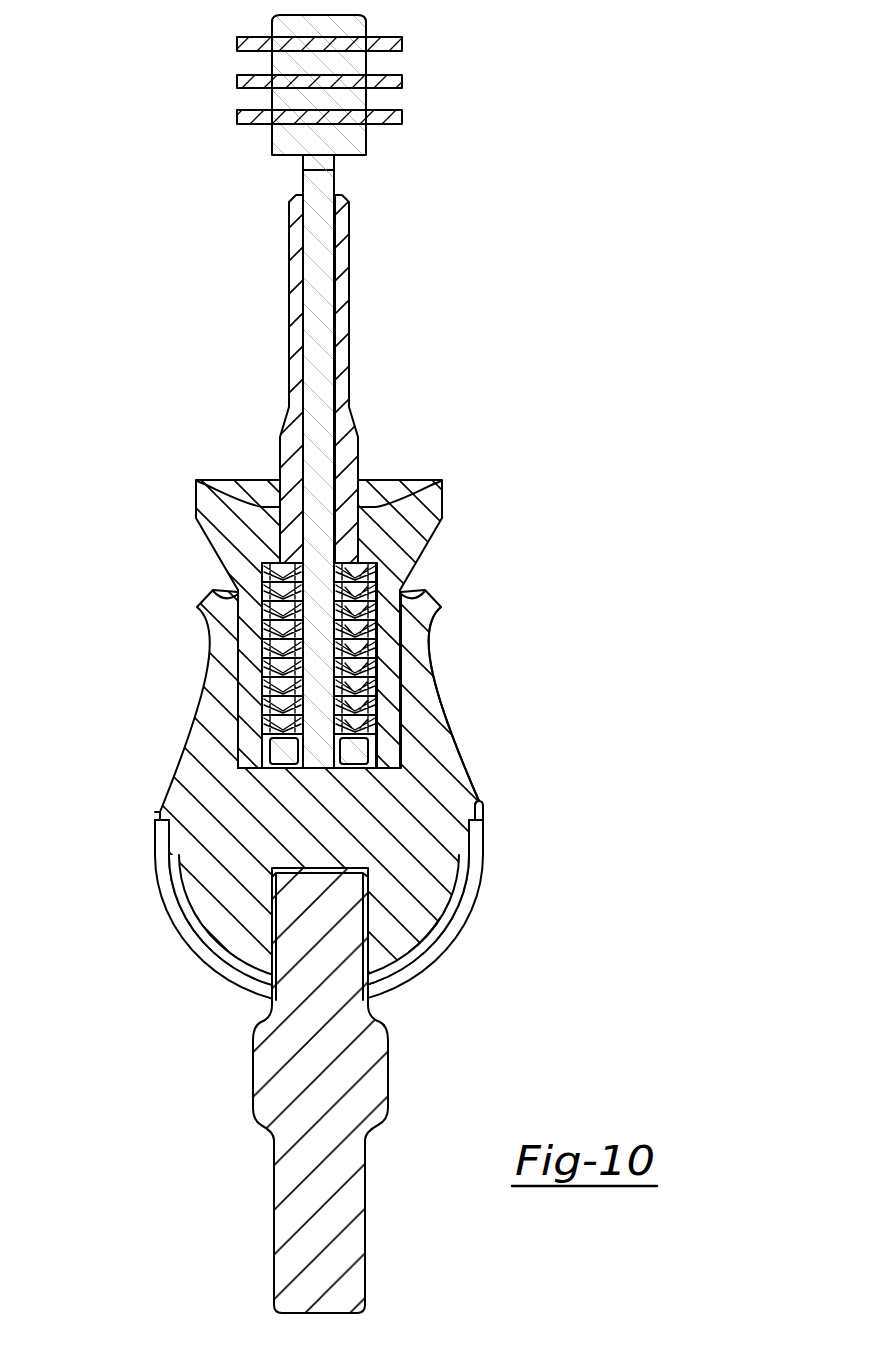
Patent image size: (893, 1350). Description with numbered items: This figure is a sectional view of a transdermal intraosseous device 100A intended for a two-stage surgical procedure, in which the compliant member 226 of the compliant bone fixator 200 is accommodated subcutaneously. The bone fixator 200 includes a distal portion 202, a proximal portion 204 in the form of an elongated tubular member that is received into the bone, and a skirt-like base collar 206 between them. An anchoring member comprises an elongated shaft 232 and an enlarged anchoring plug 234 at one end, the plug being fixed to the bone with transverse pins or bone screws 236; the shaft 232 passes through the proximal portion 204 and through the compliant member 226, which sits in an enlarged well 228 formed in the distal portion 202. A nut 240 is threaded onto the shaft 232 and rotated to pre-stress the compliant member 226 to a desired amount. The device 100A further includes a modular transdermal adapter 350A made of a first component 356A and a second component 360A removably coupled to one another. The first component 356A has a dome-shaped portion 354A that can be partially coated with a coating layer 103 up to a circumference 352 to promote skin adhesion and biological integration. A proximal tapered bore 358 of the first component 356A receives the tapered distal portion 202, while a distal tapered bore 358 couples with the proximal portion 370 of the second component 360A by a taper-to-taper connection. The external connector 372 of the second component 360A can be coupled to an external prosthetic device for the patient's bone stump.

The transdermal intraosseous device 100A is at (124, 898).
The coating layer 103 is at (166, 848).
The compliant bone fixator 200 is at (400, 318).
The distal portion 202 is at (392, 715).
The proximal portion 204 is at (297, 278).
The base collar 206 is at (210, 508).
The compliant member 226 is at (342, 648).
The well 228 is at (354, 625).
The elongated shaft 232 is at (325, 247).
The anchoring plug 234 is at (353, 60).
The bone screws 236 is at (398, 79).
The nut 240 is at (297, 755).
The modular transdermal adapter 350A is at (222, 812).
The circumference 352 is at (484, 803).
The dome-shaped portion 354A is at (446, 896).
The first component 356A is at (437, 735).
The tapered bore 358 is at (239, 726).
The second component 360A is at (266, 1069).
The proximal portion 370 is at (328, 953).
The external connector 372 is at (288, 1219).